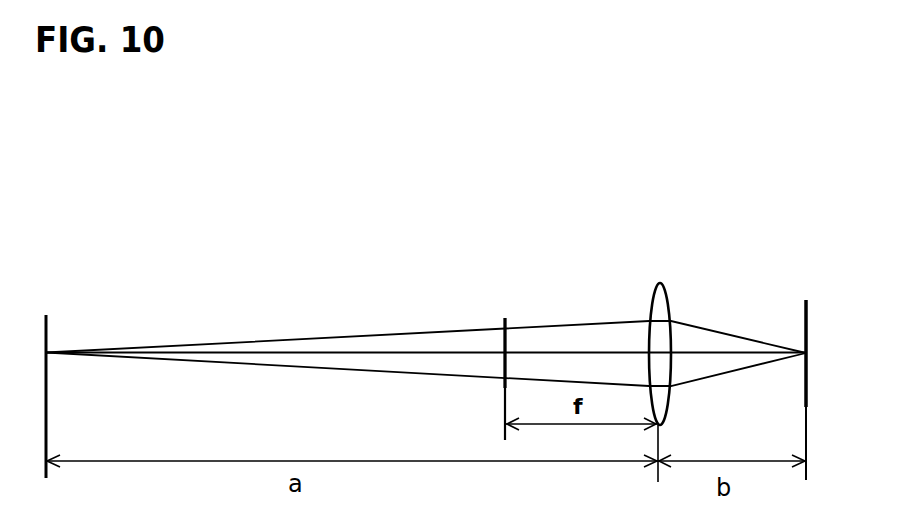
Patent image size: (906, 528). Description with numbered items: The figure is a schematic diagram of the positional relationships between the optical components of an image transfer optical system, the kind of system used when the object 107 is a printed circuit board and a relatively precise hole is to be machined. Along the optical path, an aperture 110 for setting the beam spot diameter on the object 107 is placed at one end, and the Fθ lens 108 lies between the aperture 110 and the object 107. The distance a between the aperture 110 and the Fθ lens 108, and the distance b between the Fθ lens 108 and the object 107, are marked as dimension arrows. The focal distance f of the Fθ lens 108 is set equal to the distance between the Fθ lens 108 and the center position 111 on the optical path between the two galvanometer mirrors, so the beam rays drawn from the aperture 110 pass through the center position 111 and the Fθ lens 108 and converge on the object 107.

The object 107 is at (803, 308).
The Fθ lens 108 is at (660, 283).
The aperture 110 is at (47, 312).
The center position 111 is at (503, 310).